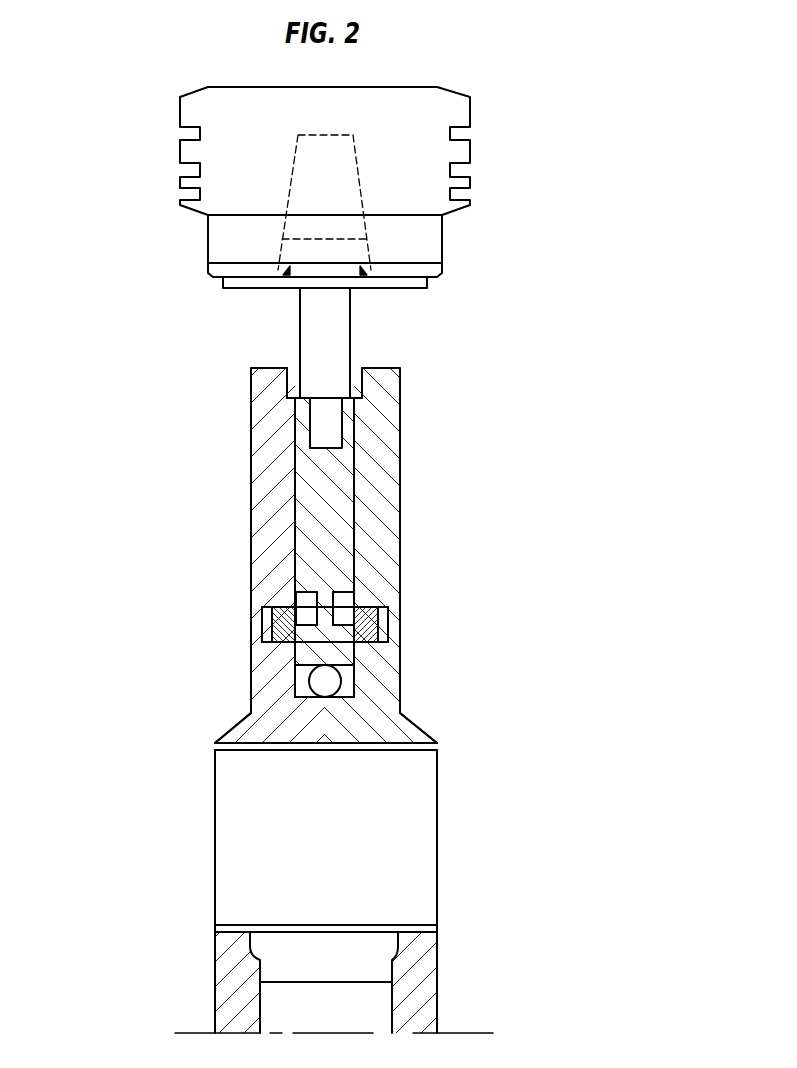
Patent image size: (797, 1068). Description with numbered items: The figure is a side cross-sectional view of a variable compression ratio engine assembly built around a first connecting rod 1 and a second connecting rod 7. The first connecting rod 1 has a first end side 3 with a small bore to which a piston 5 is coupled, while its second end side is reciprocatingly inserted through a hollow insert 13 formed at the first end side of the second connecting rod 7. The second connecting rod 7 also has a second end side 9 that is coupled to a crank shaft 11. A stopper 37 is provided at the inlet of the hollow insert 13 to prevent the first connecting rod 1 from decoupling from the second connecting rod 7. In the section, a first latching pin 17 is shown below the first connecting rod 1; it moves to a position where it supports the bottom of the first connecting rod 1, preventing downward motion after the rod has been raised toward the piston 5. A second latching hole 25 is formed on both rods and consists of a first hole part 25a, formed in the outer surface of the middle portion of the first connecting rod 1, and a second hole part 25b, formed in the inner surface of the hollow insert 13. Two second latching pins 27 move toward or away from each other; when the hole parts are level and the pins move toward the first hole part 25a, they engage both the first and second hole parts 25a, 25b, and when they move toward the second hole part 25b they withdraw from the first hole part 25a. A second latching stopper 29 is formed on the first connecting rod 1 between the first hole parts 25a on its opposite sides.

The first connecting rod 1 is at (320, 514).
The first end side 3 is at (340, 270).
The piston 5 is at (445, 242).
The second connecting rod 7 is at (398, 534).
The second end side 9 is at (268, 693).
The crank shaft 11 is at (437, 993).
The hollow insert 13 is at (403, 509).
The first latching pin 17 is at (330, 683).
The second latching hole 25 is at (398, 534).
The first hole part 25a is at (312, 605).
The second hole part 25b is at (280, 641).
The second latching pin 27 is at (373, 620).
The second latching stopper 29 is at (327, 602).
The stopper 37 is at (360, 383).